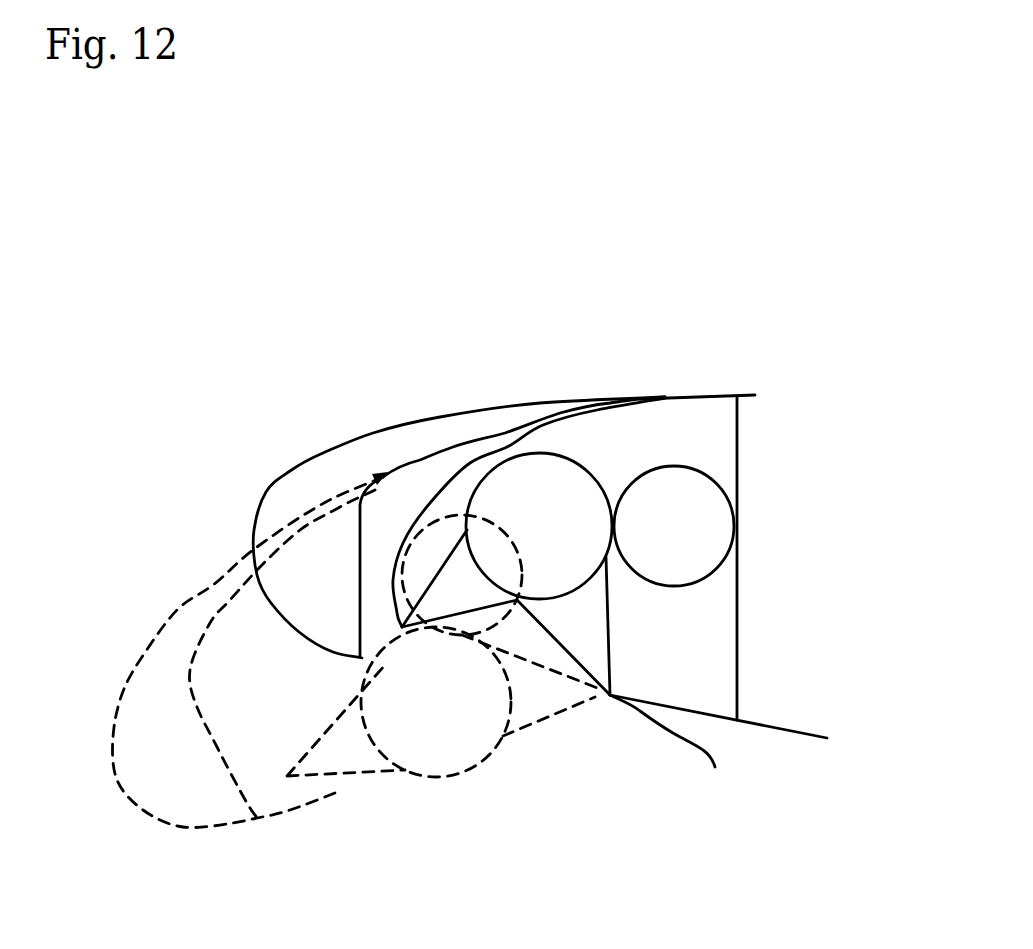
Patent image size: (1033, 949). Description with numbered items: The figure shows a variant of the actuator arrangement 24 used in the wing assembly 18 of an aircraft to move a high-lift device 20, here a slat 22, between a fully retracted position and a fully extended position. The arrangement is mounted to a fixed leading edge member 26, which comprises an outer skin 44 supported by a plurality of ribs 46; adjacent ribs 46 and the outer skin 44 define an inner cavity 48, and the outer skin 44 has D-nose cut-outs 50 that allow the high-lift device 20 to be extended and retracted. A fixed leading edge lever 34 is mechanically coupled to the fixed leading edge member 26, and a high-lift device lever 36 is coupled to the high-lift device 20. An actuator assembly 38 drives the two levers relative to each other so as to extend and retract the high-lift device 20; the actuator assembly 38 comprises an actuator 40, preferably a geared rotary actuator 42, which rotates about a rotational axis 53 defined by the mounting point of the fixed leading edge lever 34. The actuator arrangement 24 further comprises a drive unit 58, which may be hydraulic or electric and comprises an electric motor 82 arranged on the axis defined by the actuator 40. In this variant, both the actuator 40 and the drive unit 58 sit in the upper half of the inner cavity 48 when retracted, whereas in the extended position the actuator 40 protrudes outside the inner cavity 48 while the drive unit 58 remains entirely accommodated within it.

The wing assembly 18 is at (288, 262).
The high-lift device 20 is at (324, 473).
The slat 22 is at (287, 500).
The actuator arrangement 24 is at (525, 308).
The fixed leading edge member 26 is at (735, 396).
The fixed leading edge lever 34 is at (600, 645).
The high-lift device lever 36 is at (443, 592).
The actuator assembly 38 is at (641, 363).
The actuator 40 is at (518, 470).
The geared rotary actuator 42 is at (548, 470).
The outer skin 44 is at (450, 480).
The ribs 46 is at (712, 450).
The inner cavity 48 is at (728, 628).
The D-nose cut-outs 50 is at (620, 762).
The rotational axis 53 is at (679, 755).
The drive unit 58 is at (421, 531).
The electric motor 82 is at (513, 538).